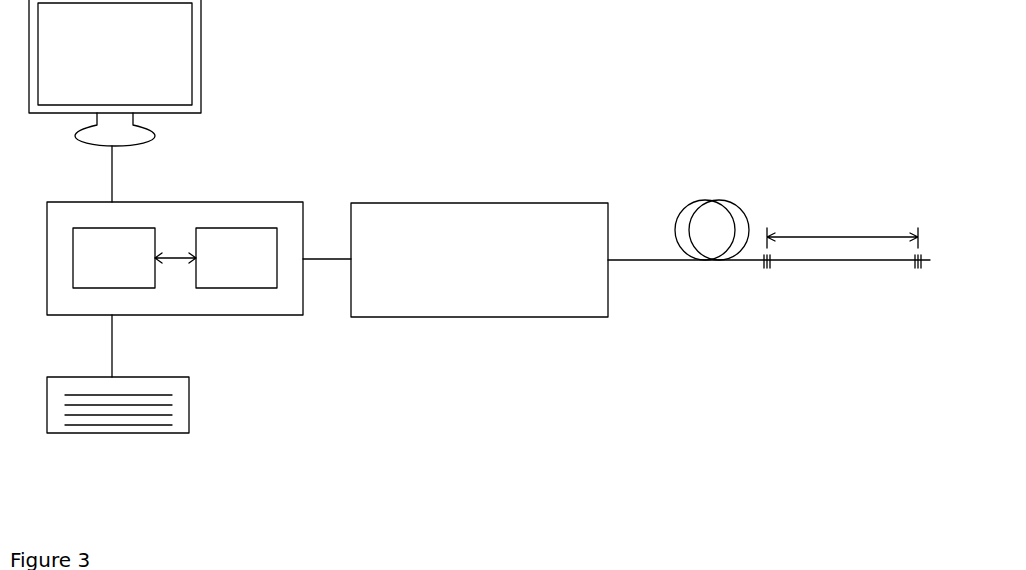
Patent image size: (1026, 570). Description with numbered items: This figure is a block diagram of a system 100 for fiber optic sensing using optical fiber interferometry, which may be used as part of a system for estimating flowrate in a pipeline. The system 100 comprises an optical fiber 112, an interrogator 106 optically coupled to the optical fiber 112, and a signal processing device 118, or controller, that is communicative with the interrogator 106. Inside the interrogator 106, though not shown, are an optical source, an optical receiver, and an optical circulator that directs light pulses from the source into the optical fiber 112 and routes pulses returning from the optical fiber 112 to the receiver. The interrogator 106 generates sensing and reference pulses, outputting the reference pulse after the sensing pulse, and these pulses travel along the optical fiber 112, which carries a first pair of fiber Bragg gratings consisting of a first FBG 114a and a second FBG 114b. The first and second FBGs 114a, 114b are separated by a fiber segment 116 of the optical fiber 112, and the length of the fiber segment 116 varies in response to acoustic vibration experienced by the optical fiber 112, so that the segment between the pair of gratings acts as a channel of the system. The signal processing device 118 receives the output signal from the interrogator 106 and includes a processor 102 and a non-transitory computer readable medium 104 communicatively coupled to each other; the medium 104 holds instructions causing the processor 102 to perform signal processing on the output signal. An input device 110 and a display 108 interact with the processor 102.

The system 100 is at (632, 440).
The processor 102 is at (131, 268).
The non-transitory computer readable medium 104 is at (253, 268).
The interrogator 106 is at (497, 270).
The display 108 is at (130, 62).
The input device 110 is at (140, 433).
The optical fiber 112 is at (700, 200).
The first fiber Bragg grating 114a is at (767, 270).
The second fiber Bragg grating 114b is at (918, 270).
The fiber segment 116 is at (842, 230).
The signal processing device 118 is at (226, 202).